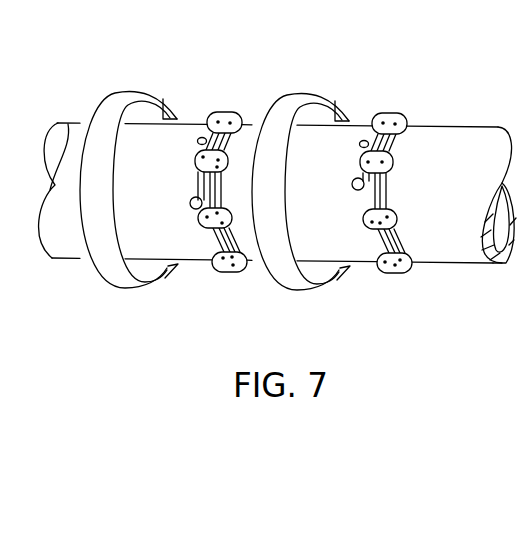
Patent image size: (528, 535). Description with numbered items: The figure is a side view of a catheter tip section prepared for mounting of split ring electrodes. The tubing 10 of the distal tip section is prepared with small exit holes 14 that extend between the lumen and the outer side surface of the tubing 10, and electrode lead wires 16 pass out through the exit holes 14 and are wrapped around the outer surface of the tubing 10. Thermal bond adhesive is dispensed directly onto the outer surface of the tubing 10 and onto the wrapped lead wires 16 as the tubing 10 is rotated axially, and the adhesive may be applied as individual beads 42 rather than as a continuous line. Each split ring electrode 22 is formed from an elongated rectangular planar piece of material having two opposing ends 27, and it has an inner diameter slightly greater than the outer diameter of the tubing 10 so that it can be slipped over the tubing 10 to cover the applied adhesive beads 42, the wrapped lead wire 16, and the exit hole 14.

The tubing 10 is at (469, 138).
The split ring electrode 22 is at (117, 93).
The opposing ends 27 is at (163, 97).
The electrode lead wire 16 is at (199, 180).
The exit hole 14 is at (190, 207).
The adhesive beads 42 is at (231, 273).